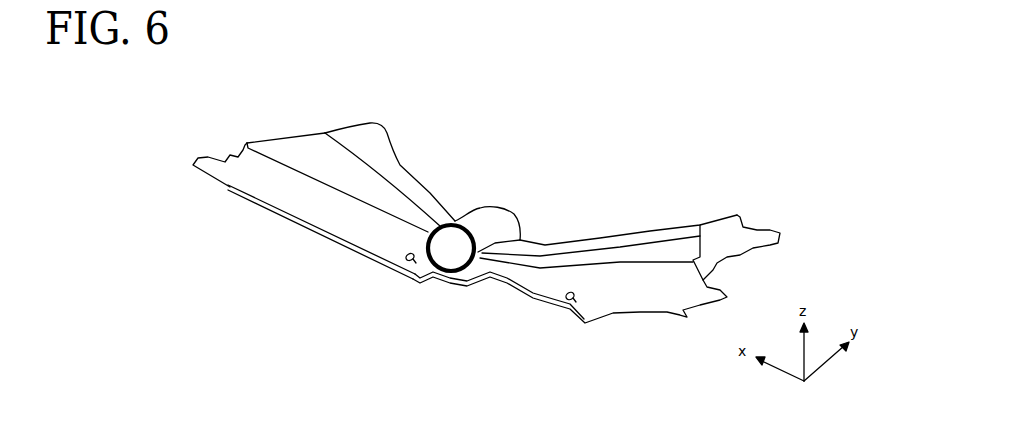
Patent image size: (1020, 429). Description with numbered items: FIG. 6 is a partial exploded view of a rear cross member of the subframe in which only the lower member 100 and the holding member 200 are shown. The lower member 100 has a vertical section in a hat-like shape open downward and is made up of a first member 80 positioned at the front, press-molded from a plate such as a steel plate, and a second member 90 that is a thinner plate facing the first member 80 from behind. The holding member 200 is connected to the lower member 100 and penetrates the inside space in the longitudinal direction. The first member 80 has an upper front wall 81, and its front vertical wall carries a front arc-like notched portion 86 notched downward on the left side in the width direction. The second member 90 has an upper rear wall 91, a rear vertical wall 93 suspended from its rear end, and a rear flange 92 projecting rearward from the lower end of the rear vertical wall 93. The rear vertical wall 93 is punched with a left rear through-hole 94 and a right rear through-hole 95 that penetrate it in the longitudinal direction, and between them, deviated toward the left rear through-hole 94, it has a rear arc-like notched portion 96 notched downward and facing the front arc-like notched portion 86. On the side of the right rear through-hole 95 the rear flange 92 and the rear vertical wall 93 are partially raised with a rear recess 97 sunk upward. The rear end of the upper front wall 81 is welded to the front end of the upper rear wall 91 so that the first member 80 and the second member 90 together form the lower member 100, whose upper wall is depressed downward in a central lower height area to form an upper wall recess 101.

The first member 80 is at (443, 182).
The upper front wall 81 is at (377, 152).
The front arc-like notched portion 86 is at (521, 232).
The second member 90 is at (321, 249).
The upper rear wall 91 is at (297, 153).
The rear flange 92 is at (229, 193).
The rear vertical wall 93 is at (291, 198).
The left rear through-hole 94 is at (404, 268).
The right rear through-hole 95 is at (563, 313).
The rear arc-like notched portion 96 is at (477, 244).
The rear recess 97 is at (508, 295).
The lower member 100 is at (638, 184).
The upper wall recess 101 is at (562, 243).
The holding member 200 is at (472, 222).